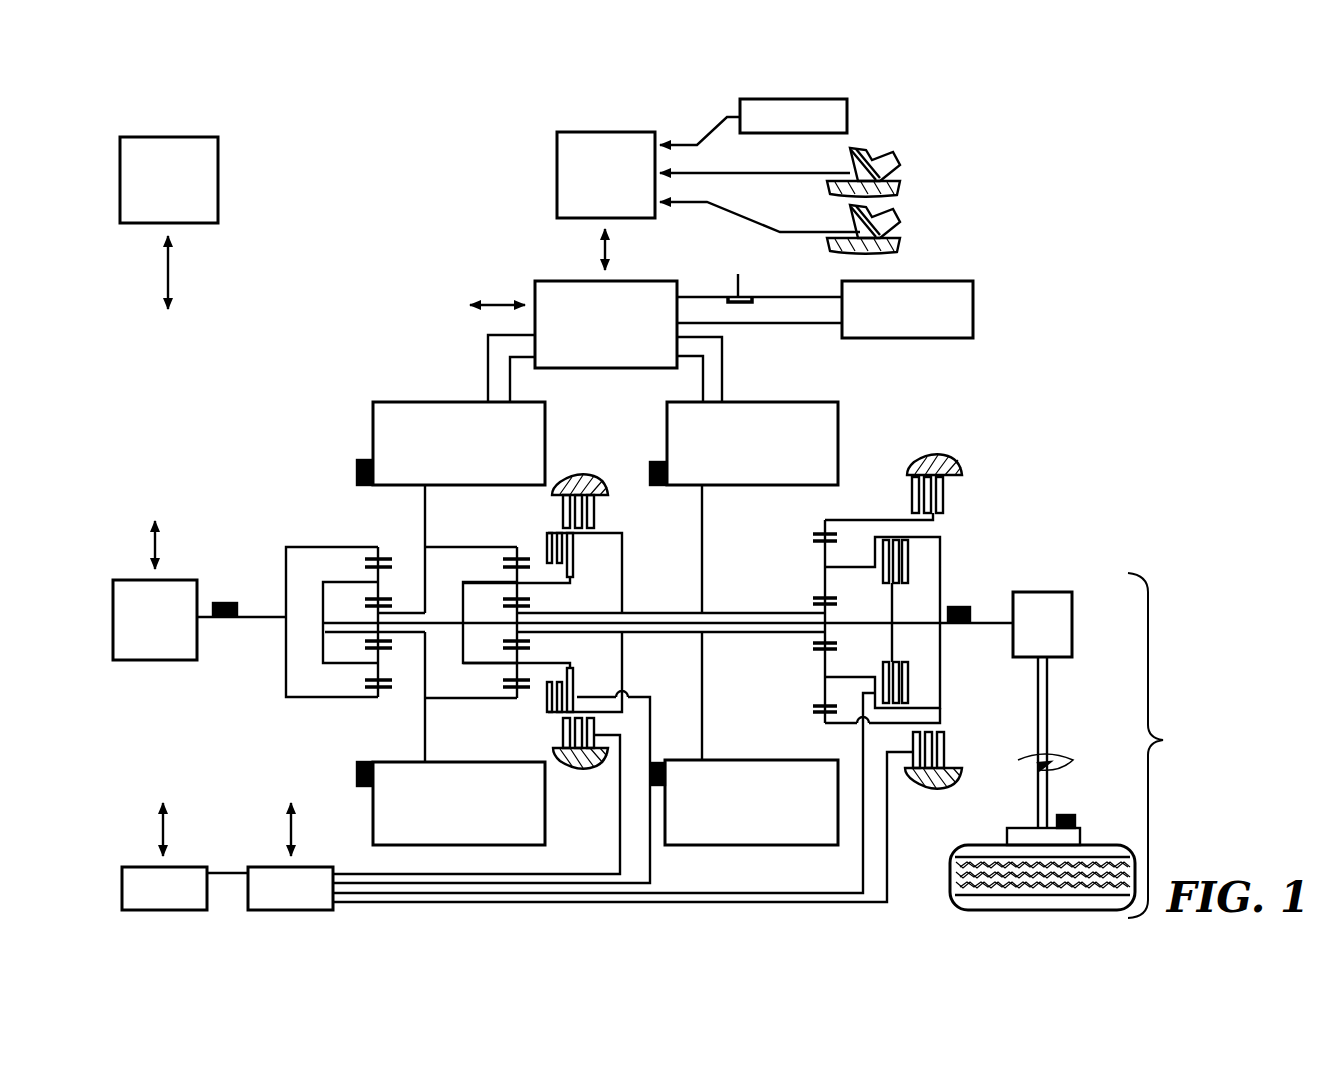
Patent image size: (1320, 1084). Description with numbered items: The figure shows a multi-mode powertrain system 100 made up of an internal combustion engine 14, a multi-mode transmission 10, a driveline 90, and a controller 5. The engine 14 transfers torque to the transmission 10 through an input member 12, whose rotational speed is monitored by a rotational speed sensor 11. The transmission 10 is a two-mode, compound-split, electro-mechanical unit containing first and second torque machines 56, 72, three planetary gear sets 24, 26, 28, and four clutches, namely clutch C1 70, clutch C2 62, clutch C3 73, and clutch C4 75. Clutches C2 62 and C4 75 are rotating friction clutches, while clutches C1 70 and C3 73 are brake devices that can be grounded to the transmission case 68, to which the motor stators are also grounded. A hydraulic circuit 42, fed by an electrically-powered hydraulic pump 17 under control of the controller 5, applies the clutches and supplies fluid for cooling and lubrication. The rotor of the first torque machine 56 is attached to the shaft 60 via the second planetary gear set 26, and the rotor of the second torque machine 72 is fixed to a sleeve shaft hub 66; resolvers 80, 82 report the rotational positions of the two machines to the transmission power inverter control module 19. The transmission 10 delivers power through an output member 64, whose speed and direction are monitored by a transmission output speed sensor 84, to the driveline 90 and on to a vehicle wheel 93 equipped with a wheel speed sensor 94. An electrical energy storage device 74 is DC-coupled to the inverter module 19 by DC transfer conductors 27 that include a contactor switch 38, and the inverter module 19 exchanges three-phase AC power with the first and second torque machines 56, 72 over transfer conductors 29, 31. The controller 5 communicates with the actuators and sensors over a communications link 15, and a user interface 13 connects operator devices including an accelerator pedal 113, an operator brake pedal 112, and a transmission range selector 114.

The controller 5 is at (160, 192).
The multi-mode transmission 10 is at (333, 365).
The rotational speed sensor 11 is at (224, 602).
The input member 12 is at (262, 614).
The user interface 13 is at (594, 188).
The internal combustion engine 14 is at (155, 620).
The communications link 15 is at (139, 282).
The electrically-powered hydraulic pump 17 is at (185, 888).
The transmission power inverter control module 19 is at (606, 324).
The first planetary gear set 24 is at (372, 537).
The second planetary gear set 26 is at (513, 537).
The DC transfer conductors 27 is at (690, 296).
The third planetary gear set 28 is at (818, 520).
The transfer conductors 29 is at (488, 366).
The transfer conductors 31 is at (722, 361).
The contactor switch 38 is at (737, 286).
The hydraulic circuit 42 is at (580, 800).
The first torque machine 56 is at (447, 812).
The shaft 60 is at (866, 622).
The clutch C2 62 is at (915, 570).
The output member 64 is at (988, 622).
The sleeve shaft hub 66 is at (737, 612).
The transmission case 68 is at (580, 477).
The clutch C1 70 is at (908, 490).
The second torque machine 72 is at (761, 812).
The clutch C3 73 is at (596, 513).
The electrical energy storage device 74 is at (907, 309).
The clutch C4 75 is at (583, 557).
The resolver 80 is at (356, 472).
The resolver 82 is at (658, 461).
The transmission output speed sensor 84 is at (958, 606).
The driveline 90 is at (1165, 738).
The vehicle wheel 93 is at (1006, 837).
The wheel speed sensor 94 is at (1066, 814).
The multi-mode powertrain system 100 is at (976, 240).
The operator brake pedal 112 is at (852, 224).
The accelerator pedal 113 is at (852, 168).
The transmission range selector 114 is at (777, 130).